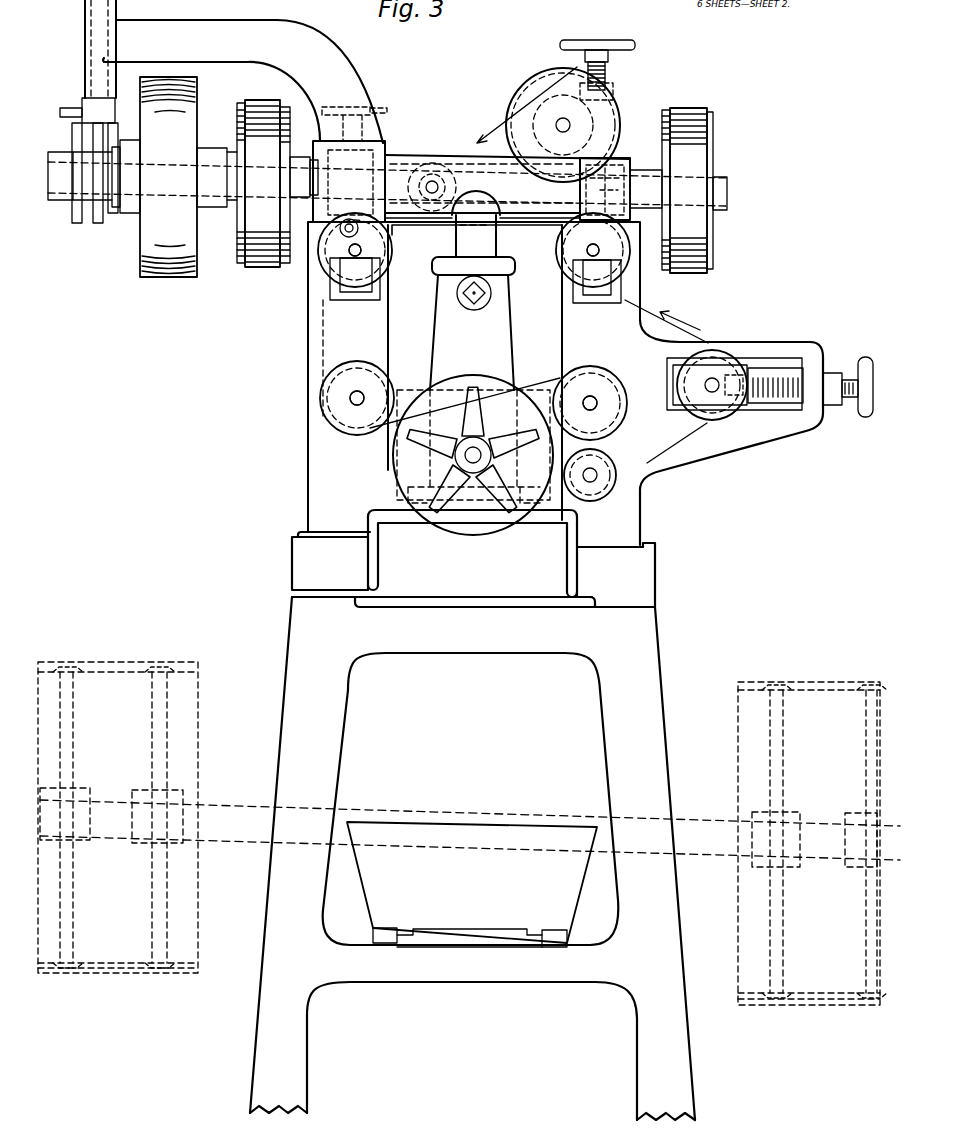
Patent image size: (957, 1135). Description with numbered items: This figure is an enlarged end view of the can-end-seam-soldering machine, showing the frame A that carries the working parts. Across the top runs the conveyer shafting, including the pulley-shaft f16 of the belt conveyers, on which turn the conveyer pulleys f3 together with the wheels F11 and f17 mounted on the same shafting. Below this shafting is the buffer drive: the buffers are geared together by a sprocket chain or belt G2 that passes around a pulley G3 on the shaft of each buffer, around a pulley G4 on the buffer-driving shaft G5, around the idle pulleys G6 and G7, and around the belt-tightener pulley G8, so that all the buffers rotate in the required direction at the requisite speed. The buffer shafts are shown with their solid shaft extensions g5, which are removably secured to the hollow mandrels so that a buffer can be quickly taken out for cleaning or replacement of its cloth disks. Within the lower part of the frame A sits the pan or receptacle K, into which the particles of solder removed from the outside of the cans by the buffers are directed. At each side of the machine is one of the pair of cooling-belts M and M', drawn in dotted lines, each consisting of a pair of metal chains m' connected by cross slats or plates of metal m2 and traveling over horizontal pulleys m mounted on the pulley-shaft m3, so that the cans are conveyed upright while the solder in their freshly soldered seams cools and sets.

The frame A is at (713, 440).
The pan or receptacle K is at (472, 884).
The sprocket chain or belt G2 is at (323, 343).
The pulley G3 is at (322, 262).
The pulley G4 is at (538, 82).
The buffer-driving shaft G5 is at (563, 125).
The idle pulley G6 is at (433, 162).
The idle pulley G7 is at (612, 497).
The belt-tightener pulley G8 is at (728, 352).
The solid shaft extension g5 is at (355, 250).
The roller f17 is at (168, 177).
The gear wheel F11 is at (239, 106).
The pulley f3 is at (241, 266).
The pulley-shaft f16 is at (728, 197).
The cooling-belt M is at (111, 783).
The cooling-belt M' is at (805, 810).
The horizontal pulley m is at (470, 814).
The metal chain m' is at (459, 833).
The cross slats or plates of metal m2 is at (131, 975).
The pulley-shaft m3 is at (226, 800).